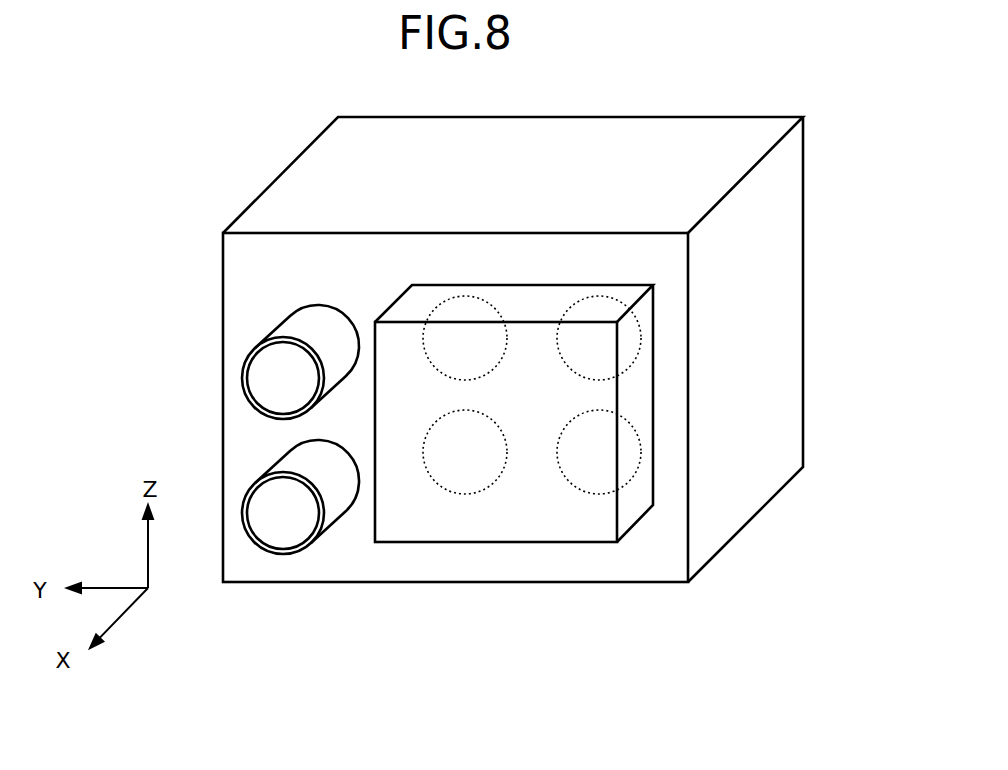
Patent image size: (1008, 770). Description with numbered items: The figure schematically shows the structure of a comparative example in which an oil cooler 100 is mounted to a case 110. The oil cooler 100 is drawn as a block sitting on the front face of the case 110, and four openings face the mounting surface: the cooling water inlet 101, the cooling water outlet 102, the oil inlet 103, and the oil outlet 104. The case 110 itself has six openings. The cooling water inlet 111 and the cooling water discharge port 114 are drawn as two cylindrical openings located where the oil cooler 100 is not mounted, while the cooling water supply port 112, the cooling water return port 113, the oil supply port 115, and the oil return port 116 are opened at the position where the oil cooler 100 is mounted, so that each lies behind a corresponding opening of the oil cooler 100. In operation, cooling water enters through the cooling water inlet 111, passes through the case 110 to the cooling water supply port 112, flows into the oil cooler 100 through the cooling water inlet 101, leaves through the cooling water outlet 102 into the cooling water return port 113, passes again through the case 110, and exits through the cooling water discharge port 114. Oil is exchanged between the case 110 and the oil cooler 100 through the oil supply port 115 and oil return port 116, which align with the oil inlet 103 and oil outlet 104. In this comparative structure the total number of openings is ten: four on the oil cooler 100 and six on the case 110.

The oil cooler 100 is at (580, 557).
The cooling water inlet 101 is at (440, 544).
The cooling water outlet 102 is at (727, 457).
The oil inlet 103 is at (727, 343).
The oil outlet 104 is at (488, 488).
The case 110 is at (668, 110).
The cooling water inlet 111 is at (260, 540).
The cooling water supply port 112 is at (432, 493).
The cooling water return port 113 is at (633, 477).
The cooling water discharge port 114 is at (251, 366).
The oil supply port 115 is at (633, 363).
The oil return port 116 is at (449, 381).